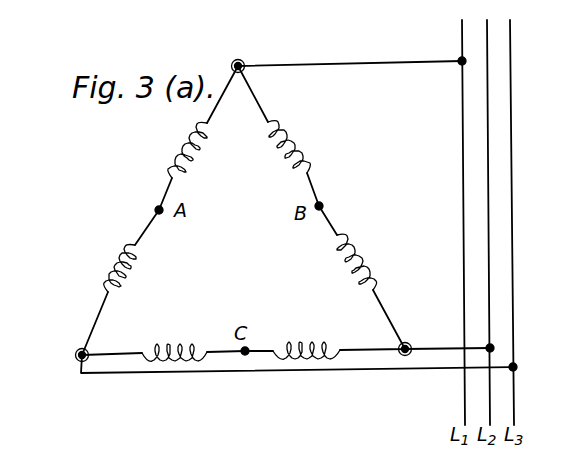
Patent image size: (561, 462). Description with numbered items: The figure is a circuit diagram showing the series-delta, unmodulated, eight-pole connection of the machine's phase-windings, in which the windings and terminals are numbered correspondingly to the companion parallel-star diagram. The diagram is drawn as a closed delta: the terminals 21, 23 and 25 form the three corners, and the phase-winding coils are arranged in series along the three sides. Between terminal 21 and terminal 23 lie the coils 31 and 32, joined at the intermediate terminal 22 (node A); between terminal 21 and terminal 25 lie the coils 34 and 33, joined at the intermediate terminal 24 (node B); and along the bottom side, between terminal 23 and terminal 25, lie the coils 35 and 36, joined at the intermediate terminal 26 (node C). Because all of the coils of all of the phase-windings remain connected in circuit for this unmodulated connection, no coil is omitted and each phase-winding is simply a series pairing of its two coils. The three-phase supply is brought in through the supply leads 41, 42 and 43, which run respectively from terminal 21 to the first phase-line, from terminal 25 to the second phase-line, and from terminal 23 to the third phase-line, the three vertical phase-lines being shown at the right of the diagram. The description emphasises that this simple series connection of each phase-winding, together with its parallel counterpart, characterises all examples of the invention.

The first terminal node 21 is at (238, 59).
The node A junction 22 is at (156, 210).
The second terminal node 23 is at (77, 352).
The node B junction 24 is at (322, 206).
The third terminal node 25 is at (409, 344).
The node C junction 26 is at (245, 355).
The winding coil 31 is at (176, 152).
The winding coil 32 is at (113, 265).
The winding coil 33 is at (371, 256).
The winding coil 34 is at (292, 129).
The winding coil 35 is at (179, 346).
The winding coil 36 is at (311, 345).
The supply lead 41 is at (364, 60).
The supply lead 42 is at (435, 352).
The supply lead 43 is at (315, 373).